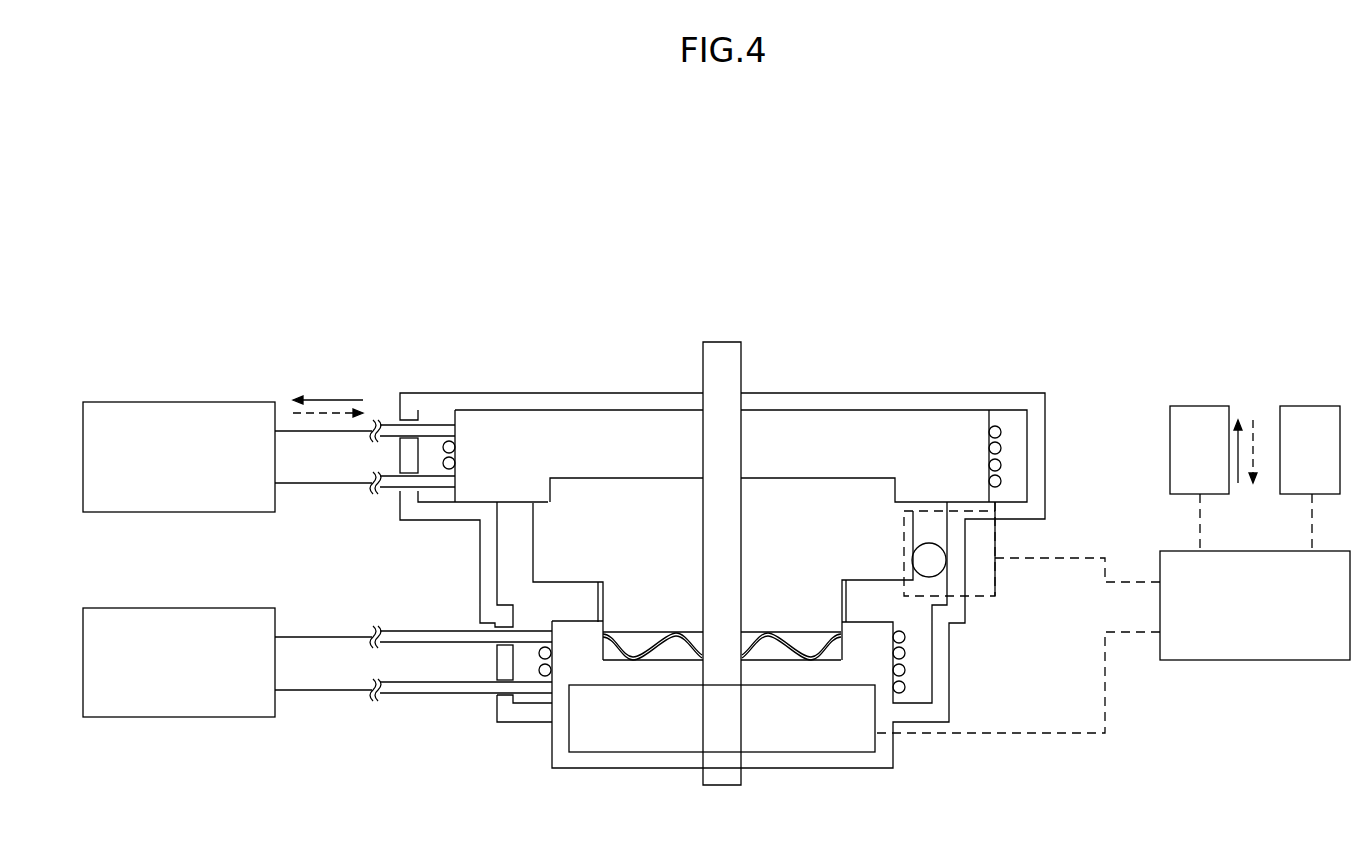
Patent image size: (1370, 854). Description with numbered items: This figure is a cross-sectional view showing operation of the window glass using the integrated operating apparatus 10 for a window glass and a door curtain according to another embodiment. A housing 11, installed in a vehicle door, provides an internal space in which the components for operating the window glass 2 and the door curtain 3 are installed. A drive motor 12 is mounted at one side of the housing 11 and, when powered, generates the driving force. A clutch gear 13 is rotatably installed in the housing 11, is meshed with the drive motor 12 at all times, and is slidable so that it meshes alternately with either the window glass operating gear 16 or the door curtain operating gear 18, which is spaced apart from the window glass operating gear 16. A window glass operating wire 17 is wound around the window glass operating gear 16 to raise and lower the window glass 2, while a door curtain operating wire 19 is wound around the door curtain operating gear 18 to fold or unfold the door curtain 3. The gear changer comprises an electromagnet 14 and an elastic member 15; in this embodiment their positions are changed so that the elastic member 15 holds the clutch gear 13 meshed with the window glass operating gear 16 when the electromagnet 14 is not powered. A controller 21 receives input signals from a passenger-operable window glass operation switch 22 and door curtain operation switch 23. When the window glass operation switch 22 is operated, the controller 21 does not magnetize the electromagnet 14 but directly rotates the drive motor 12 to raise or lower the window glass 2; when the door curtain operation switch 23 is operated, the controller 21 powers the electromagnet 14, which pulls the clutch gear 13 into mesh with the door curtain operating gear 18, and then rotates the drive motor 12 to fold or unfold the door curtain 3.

The window glass 2 is at (180, 402).
The door curtain 3 is at (180, 608).
The integrated operating apparatus 10 is at (1033, 175).
The housing 11 is at (595, 405).
The drive motor 12 is at (980, 542).
The clutch gear 13 is at (565, 553).
The electromagnet 14 is at (643, 727).
The elastic member 15 is at (777, 638).
The window glass operating gear 16 is at (504, 432).
The window glass operating wire 17 is at (390, 427).
The door curtain operating gear 18 is at (580, 650).
The door curtain operating wire 19 is at (427, 688).
The controller 21 is at (1255, 660).
The window glass operation switch 22 is at (1200, 406).
The door curtain operation switch 23 is at (1312, 406).